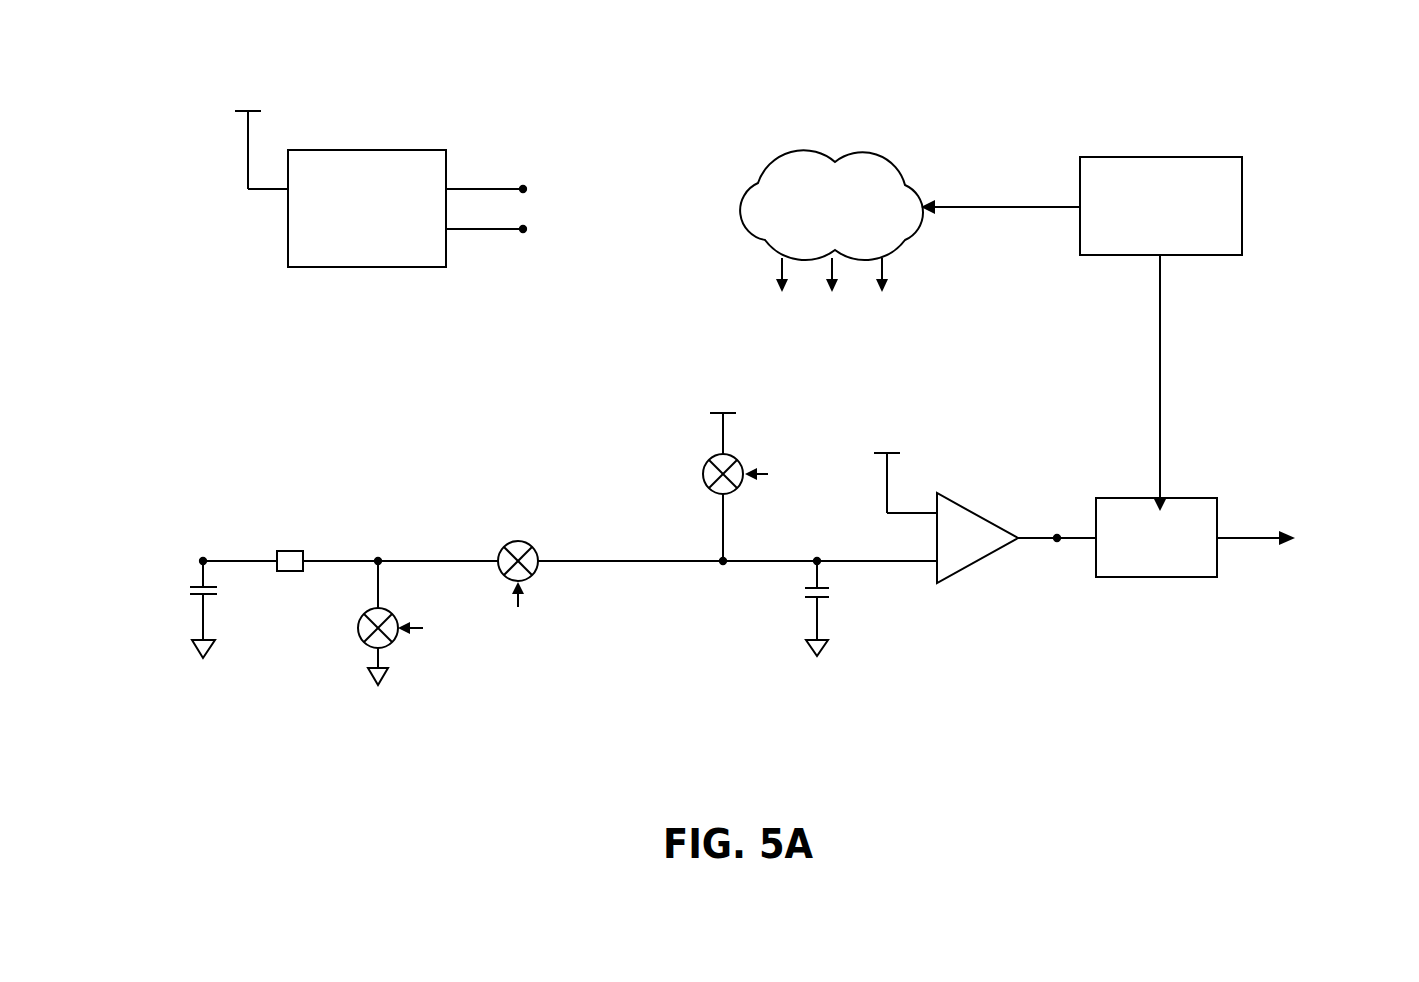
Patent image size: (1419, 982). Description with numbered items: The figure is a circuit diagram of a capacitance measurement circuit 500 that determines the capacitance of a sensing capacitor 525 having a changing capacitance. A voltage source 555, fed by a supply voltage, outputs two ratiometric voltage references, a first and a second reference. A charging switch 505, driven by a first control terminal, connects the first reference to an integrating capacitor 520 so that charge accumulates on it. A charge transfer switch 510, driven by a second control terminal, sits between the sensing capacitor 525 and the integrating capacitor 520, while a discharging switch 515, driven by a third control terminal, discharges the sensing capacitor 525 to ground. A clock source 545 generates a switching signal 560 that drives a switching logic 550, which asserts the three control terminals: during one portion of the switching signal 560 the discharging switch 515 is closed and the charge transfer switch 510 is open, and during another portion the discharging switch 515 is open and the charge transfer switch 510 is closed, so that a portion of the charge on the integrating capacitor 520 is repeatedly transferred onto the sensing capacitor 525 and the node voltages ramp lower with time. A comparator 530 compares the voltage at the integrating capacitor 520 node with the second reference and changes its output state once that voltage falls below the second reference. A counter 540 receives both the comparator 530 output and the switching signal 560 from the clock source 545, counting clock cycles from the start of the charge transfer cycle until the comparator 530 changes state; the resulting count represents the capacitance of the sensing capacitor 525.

The capacitance measurement circuit 500 is at (122, 442).
The charging switch 505 is at (703, 475).
The charge transfer switch 510 is at (505, 547).
The discharging switch 515 is at (364, 642).
The integrating capacitor 520 is at (800, 597).
The sensing capacitor 525 is at (185, 600).
The comparator 530 is at (988, 562).
The counter 540 is at (1187, 577).
The clock source 545 is at (1161, 334).
The switching logic 550 is at (831, 237).
The voltage source 555 is at (413, 173).
The switching signal 560 is at (1160, 293).